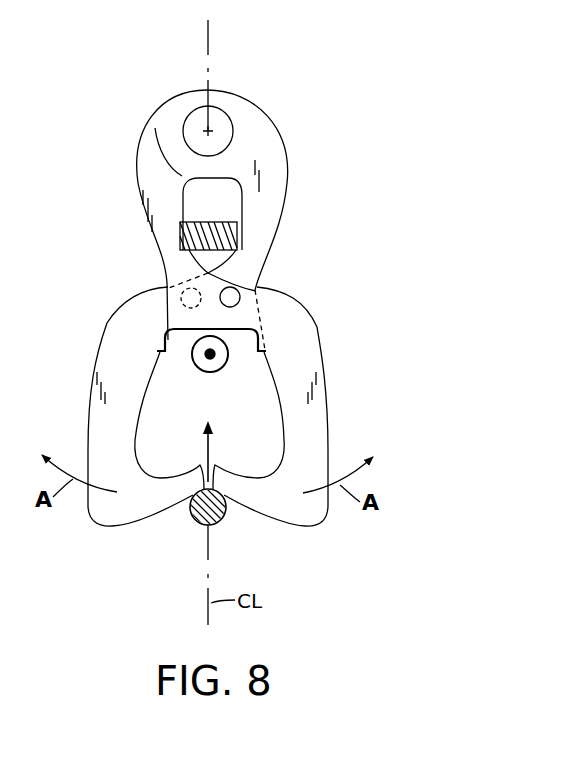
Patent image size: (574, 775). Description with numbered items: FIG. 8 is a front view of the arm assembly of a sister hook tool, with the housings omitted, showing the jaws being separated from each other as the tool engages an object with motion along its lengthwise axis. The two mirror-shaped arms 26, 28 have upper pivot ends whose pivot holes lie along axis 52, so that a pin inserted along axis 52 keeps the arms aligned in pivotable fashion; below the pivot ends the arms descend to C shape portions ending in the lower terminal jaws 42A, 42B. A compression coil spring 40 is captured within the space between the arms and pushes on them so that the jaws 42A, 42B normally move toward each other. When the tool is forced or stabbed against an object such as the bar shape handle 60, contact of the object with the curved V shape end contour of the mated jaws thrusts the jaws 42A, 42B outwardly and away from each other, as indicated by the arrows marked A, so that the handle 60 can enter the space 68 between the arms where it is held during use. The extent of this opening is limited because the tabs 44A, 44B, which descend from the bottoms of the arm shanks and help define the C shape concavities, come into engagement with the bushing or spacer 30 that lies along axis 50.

The arm 26 is at (313, 327).
The arm 28 is at (278, 213).
The spacer (bushing) 30 is at (220, 372).
The compression coil spring 40 is at (185, 236).
The jaw 42A is at (270, 497).
The jaw 42B is at (152, 497).
The tab 44A is at (158, 350).
The tab 44B is at (264, 350).
The axis 50 is at (198, 356).
The axis 52 is at (208, 131).
The bar shape handle 60 is at (216, 526).
The space 68 is at (260, 451).